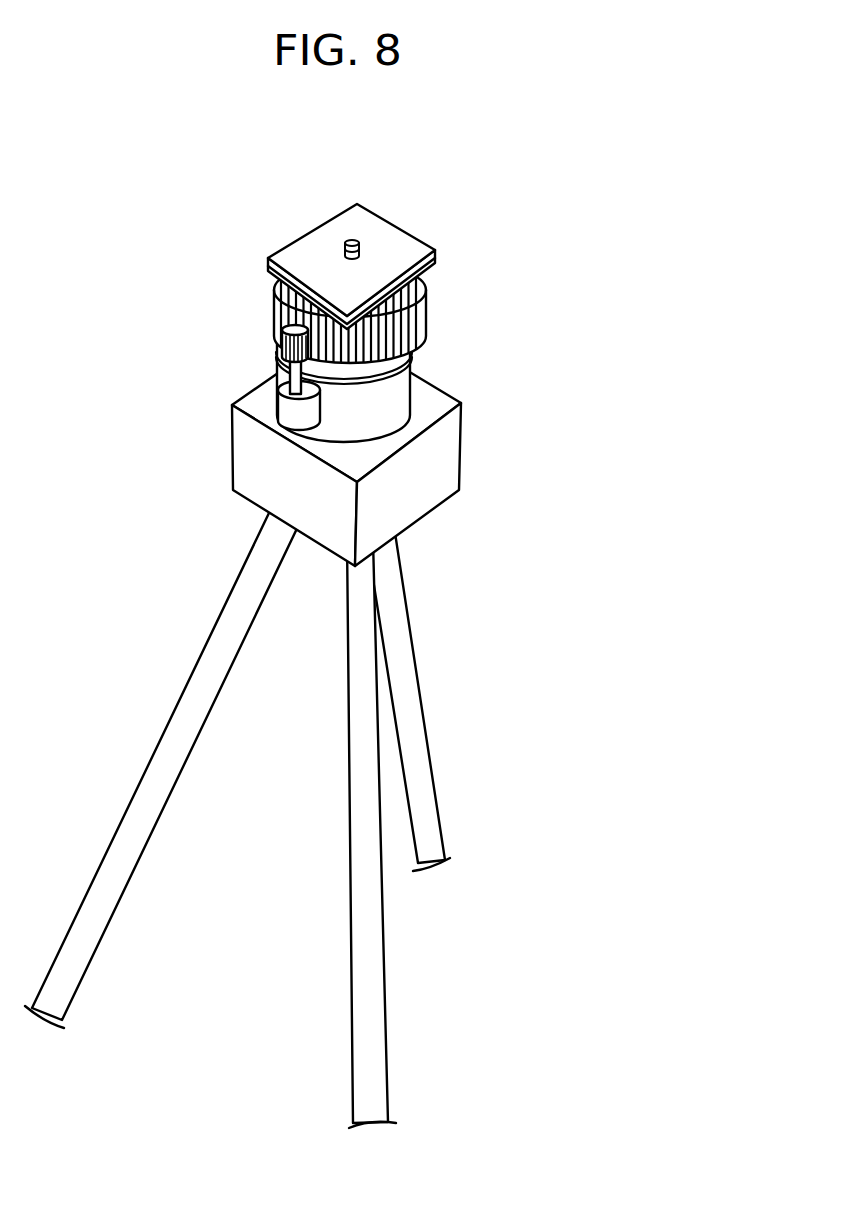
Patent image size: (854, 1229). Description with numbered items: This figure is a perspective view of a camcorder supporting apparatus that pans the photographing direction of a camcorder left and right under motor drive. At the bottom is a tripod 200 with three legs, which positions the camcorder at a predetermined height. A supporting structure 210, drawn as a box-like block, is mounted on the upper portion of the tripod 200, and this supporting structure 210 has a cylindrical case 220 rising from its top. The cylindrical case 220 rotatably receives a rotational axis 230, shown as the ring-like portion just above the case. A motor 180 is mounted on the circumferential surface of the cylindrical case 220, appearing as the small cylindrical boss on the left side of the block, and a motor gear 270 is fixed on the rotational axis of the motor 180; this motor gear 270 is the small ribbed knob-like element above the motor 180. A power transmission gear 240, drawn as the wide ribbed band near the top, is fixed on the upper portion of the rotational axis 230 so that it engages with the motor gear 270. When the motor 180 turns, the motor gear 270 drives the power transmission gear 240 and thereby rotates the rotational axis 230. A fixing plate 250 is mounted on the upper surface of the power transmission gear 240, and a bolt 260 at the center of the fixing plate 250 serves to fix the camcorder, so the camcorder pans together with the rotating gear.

The motor 180 is at (287, 417).
The tripod 200 is at (402, 648).
The supporting structure 210 is at (435, 499).
The cylindrical case 220 is at (417, 393).
The rotational axis 230 is at (420, 352).
The power transmission gear 240 is at (428, 311).
The fixing plate 250 is at (308, 245).
The bolt 260 is at (356, 240).
The motor gear 270 is at (281, 342).